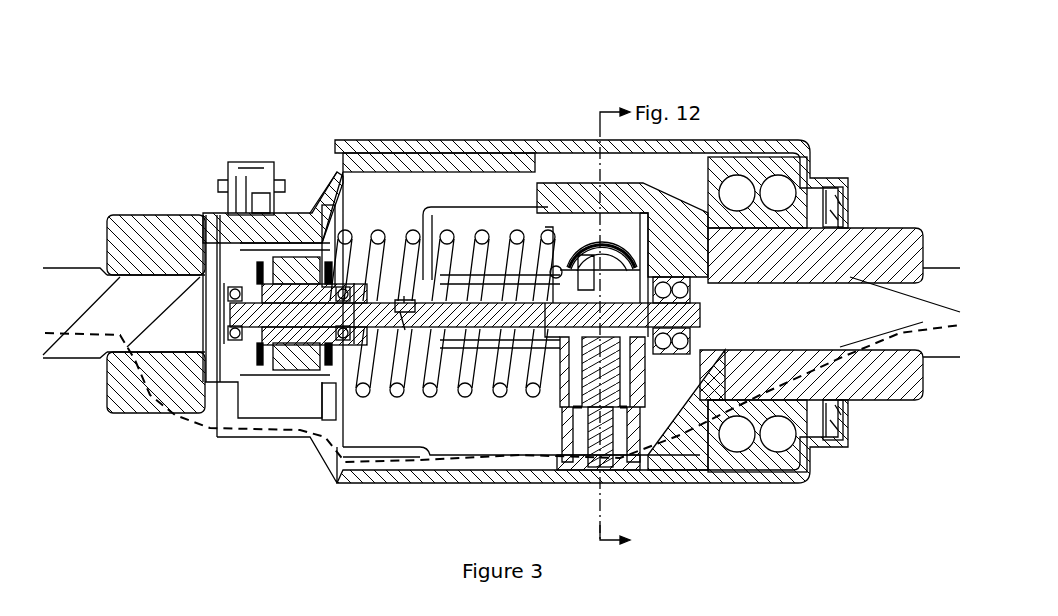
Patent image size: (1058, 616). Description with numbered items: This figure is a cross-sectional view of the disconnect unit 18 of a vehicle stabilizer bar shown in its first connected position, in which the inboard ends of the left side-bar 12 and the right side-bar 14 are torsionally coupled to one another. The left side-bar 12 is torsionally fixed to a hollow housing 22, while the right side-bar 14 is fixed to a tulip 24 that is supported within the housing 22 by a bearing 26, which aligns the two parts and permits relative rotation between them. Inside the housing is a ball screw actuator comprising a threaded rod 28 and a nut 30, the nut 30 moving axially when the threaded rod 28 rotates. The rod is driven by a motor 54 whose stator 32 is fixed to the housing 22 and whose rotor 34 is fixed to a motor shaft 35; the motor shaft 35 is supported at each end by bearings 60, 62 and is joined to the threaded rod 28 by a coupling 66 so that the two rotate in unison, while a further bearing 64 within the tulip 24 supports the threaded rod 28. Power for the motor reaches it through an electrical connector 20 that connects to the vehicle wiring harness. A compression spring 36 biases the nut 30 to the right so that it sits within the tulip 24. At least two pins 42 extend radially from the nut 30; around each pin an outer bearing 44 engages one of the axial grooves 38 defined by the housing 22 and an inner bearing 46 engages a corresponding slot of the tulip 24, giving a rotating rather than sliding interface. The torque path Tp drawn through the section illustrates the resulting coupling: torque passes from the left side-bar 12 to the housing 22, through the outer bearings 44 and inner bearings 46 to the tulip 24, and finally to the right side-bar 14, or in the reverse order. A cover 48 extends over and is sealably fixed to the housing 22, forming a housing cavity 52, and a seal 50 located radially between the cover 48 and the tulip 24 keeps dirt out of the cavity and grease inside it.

The left side-bar 12 is at (68, 277).
The right side-bar 14 is at (940, 272).
The disconnect unit 18 is at (546, 78).
The electrical connector 20 is at (255, 160).
The hollow housing 22 is at (138, 223).
The tulip 24 is at (880, 400).
The bearing 26 is at (770, 158).
The threaded rod 28 is at (492, 300).
The nut 30 is at (568, 262).
The stator 32 is at (307, 262).
The rotor 34 is at (290, 330).
The motor shaft 35 is at (296, 320).
The compression spring 36 is at (379, 236).
The axial grooves 38 is at (432, 236).
The pins 42 is at (598, 470).
The outer bearing 44 is at (634, 470).
The inner bearing 46 is at (563, 427).
The cover 48 is at (733, 140).
The seal 50 is at (840, 207).
The housing cavity 52 is at (485, 458).
The motor 54 is at (287, 305).
The bearing 60 is at (233, 333).
The bearing 62 is at (346, 345).
The bearing 64 is at (674, 355).
The coupling 66 is at (421, 330).
The torque path Tp is at (158, 393).